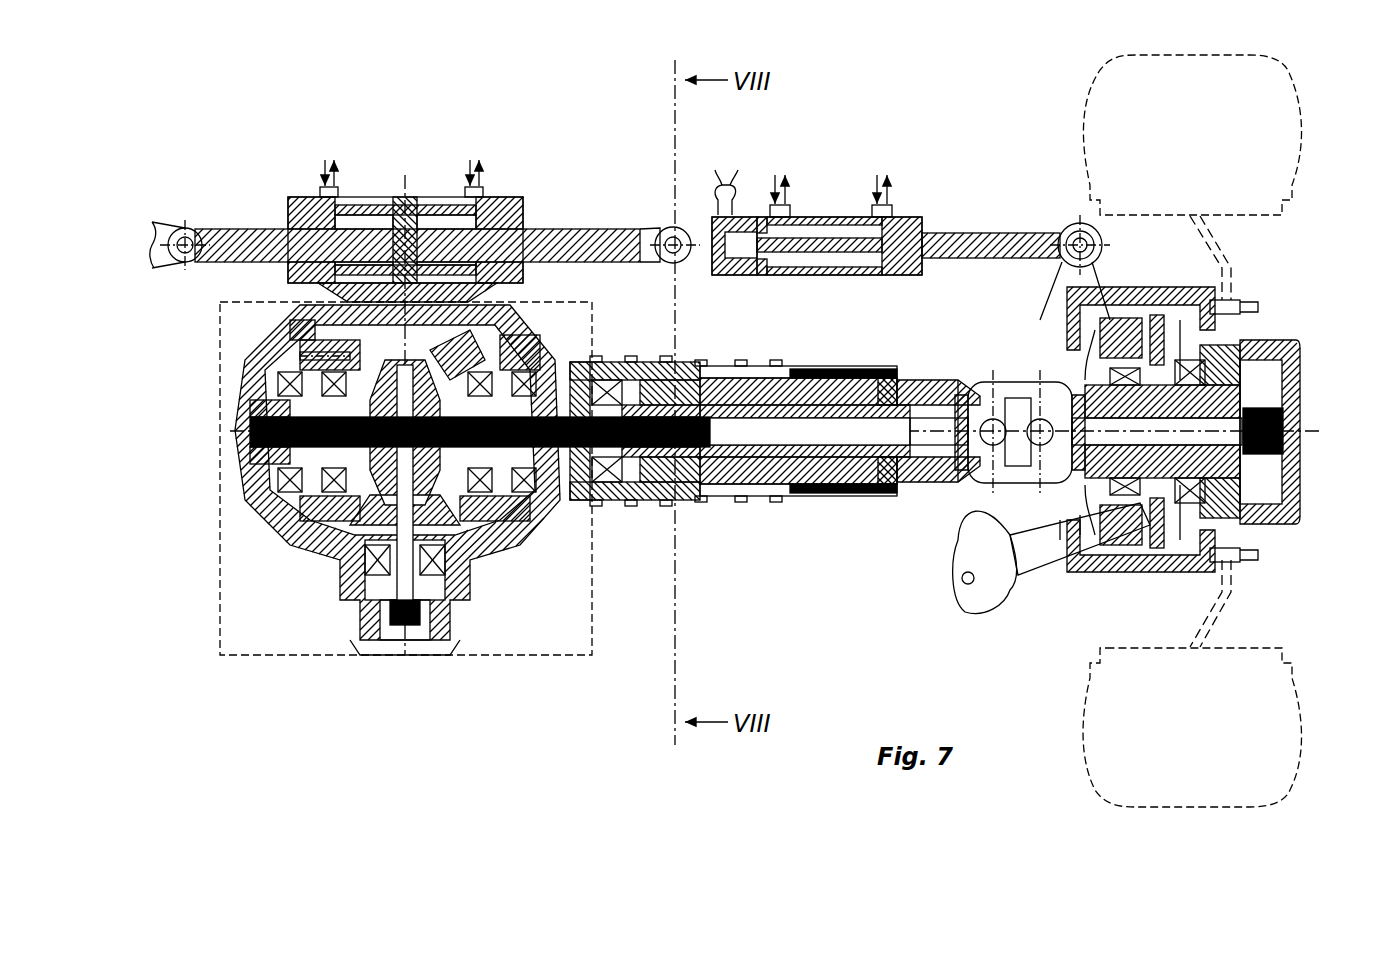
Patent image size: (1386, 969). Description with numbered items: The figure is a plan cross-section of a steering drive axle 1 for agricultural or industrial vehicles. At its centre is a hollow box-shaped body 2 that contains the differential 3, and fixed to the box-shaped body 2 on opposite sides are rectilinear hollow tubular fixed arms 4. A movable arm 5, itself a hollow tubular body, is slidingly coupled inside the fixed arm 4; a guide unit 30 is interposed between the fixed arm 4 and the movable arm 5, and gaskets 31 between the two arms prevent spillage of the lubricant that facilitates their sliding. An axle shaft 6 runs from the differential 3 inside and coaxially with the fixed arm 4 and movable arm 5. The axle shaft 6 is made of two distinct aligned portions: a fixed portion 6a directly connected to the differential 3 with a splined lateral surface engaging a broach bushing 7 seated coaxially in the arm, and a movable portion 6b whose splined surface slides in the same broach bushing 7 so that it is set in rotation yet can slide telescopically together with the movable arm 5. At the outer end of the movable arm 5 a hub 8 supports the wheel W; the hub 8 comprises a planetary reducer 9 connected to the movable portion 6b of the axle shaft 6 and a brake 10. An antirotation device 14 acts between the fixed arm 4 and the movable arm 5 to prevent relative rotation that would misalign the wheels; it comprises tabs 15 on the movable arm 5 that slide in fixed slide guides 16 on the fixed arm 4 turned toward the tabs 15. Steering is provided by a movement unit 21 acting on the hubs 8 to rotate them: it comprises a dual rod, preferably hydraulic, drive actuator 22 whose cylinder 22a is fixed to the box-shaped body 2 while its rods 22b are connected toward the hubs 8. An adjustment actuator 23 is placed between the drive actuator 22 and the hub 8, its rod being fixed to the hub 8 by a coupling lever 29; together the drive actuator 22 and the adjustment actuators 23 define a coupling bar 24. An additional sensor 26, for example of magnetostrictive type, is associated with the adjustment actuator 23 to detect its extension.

The drive axle 1 is at (254, 114).
The box-shaped body 2 is at (290, 545).
The differential 3 is at (470, 348).
The fixed arm 4 is at (766, 503).
The movable arm 5 is at (916, 380).
The axle shaft 6 is at (862, 450).
The fixed portion 6a is at (540, 420).
The movable portion 6b is at (791, 420).
The broach bushing 7 is at (640, 410).
The hub 8 is at (1225, 302).
The planetary reducer 9 is at (1270, 427).
The brake 10 is at (1130, 300).
The antirotation device 14 is at (686, 366).
The tab 15 is at (660, 380).
The fixed slide guide 16 is at (756, 380).
The movement unit 21 is at (405, 175).
The drive actuator 22 is at (366, 198).
The cylinder 22a is at (440, 198).
The rod 22b is at (605, 229).
The adjustment actuator 23 is at (832, 217).
The coupling bar 24 is at (566, 178).
The additional sensor 26 is at (735, 215).
The coupling lever 29 is at (1003, 380).
The guide unit 30 is at (846, 372).
The gasket 31 is at (886, 372).
The wheel W is at (1275, 104).